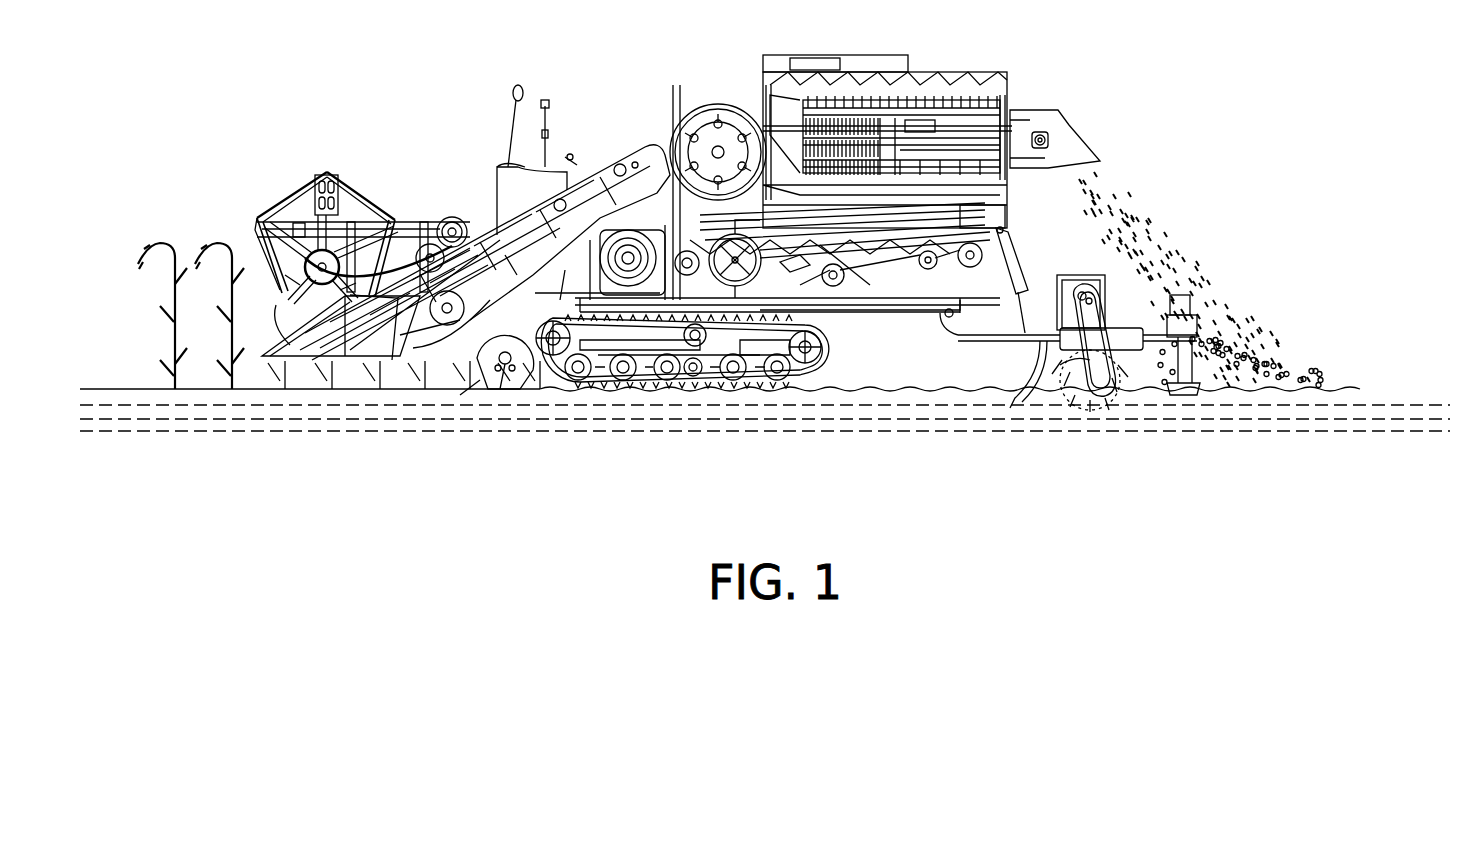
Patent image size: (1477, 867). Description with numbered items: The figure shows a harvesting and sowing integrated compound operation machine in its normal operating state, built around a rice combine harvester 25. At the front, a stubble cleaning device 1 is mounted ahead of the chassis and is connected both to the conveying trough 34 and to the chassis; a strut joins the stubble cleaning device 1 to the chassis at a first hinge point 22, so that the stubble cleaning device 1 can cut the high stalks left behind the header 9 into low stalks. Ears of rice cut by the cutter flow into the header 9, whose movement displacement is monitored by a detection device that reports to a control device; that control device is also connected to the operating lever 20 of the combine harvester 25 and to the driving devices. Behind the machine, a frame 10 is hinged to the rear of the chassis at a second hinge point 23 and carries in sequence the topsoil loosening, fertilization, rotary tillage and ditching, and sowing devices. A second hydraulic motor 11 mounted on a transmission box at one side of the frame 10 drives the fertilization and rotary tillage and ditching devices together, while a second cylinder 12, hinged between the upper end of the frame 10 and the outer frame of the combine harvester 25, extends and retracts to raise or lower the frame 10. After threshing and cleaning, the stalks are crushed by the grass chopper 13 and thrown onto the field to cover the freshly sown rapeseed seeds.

The stubble cleaning device 1 is at (518, 372).
The header 9 is at (435, 337).
The frame 10 is at (960, 333).
The second hydraulic motor 11 is at (1100, 300).
The second cylinder 12 is at (1013, 262).
The grass chopper 13 is at (1060, 135).
The operating lever 20 is at (570, 157).
The first hinge point 22 is at (579, 303).
The second hinge point 23 is at (948, 315).
The combine harvester 25 is at (878, 237).
The conveying trough 34 is at (487, 247).